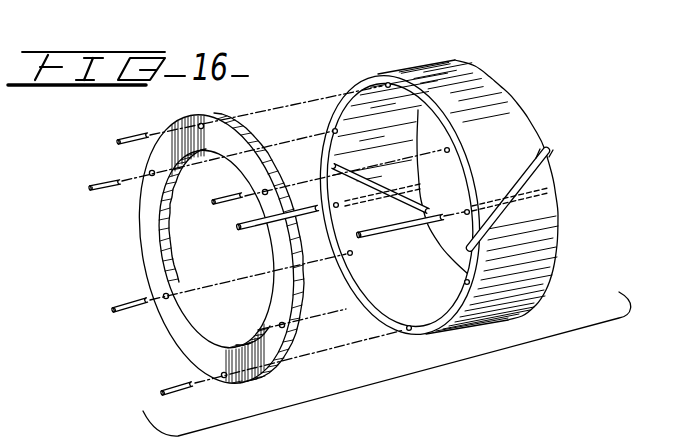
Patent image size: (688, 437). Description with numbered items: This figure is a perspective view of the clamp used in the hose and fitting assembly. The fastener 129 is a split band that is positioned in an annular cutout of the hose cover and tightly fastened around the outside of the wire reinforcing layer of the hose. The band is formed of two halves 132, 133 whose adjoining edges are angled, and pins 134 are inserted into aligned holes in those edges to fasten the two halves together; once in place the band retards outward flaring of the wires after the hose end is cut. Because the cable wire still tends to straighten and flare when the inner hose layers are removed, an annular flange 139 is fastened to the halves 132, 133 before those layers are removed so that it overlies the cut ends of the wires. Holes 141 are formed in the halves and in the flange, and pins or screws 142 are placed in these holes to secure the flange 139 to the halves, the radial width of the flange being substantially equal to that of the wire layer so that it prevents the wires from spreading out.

The fastener 129 is at (453, 184).
The band half 132 is at (527, 149).
The band half 133 is at (550, 243).
The pins 134 is at (249, 230).
The annular flange 139 is at (146, 236).
The holes 141 is at (383, 84).
The pins or screws 142 is at (130, 144).